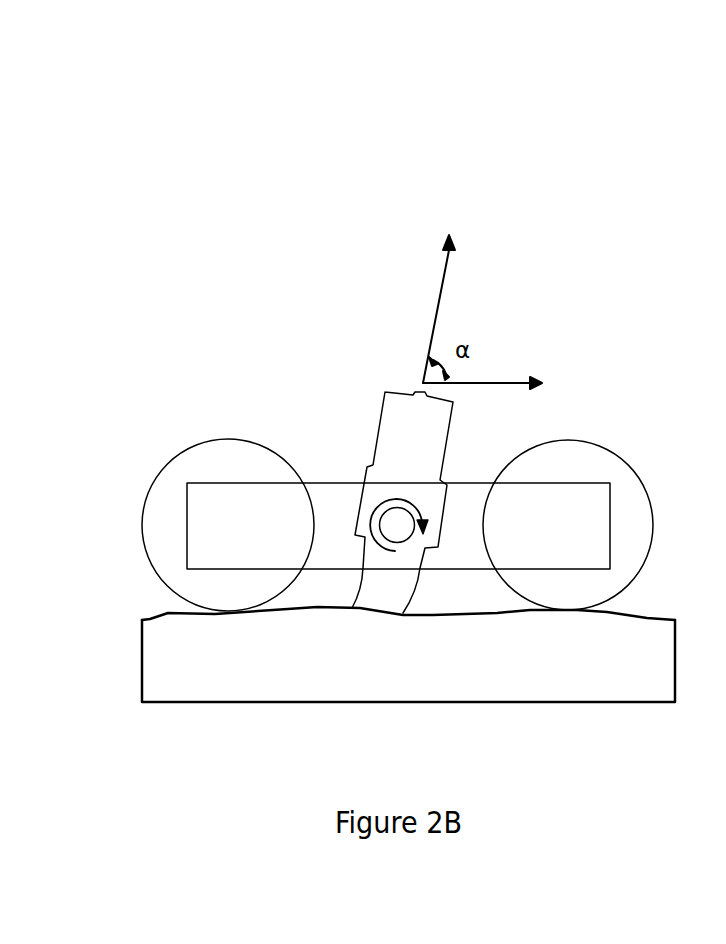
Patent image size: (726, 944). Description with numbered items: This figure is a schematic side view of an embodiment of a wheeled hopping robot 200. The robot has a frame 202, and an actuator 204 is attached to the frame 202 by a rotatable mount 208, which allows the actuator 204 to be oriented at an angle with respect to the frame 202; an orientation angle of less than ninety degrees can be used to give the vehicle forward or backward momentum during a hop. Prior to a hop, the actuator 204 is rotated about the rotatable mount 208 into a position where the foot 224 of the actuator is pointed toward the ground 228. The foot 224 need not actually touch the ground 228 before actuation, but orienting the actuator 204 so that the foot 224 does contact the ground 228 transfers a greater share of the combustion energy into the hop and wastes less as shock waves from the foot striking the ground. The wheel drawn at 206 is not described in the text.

The wheeled hopping robot 200 is at (328, 103).
The frame 202 is at (532, 515).
The actuator 204 is at (436, 445).
The left wheel 206 is at (207, 463).
The rotatable mount 208 is at (395, 525).
The foot 224 is at (375, 595).
The ground 228 is at (616, 671).